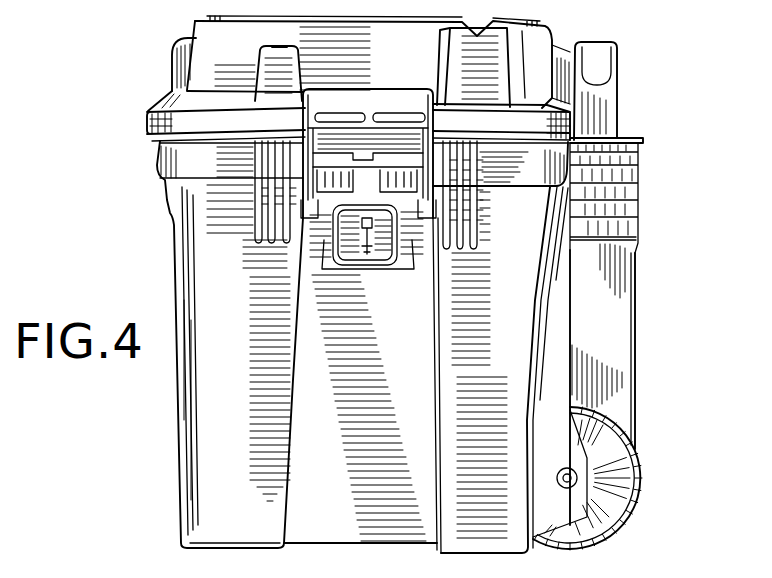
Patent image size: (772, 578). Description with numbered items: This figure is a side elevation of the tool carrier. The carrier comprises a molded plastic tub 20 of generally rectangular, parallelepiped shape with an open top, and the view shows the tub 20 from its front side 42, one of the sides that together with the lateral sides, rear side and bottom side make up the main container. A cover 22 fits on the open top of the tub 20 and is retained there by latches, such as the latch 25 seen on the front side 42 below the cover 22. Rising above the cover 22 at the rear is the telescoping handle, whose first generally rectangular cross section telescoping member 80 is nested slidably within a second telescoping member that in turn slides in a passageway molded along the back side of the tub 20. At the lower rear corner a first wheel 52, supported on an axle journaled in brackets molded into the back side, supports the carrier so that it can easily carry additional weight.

The tub 20 is at (200, 483).
The cover 22 is at (205, 66).
The latch 25 is at (404, 268).
The front side 42 is at (177, 422).
The first wheel 52 is at (606, 541).
The first telescoping member 80 is at (617, 116).